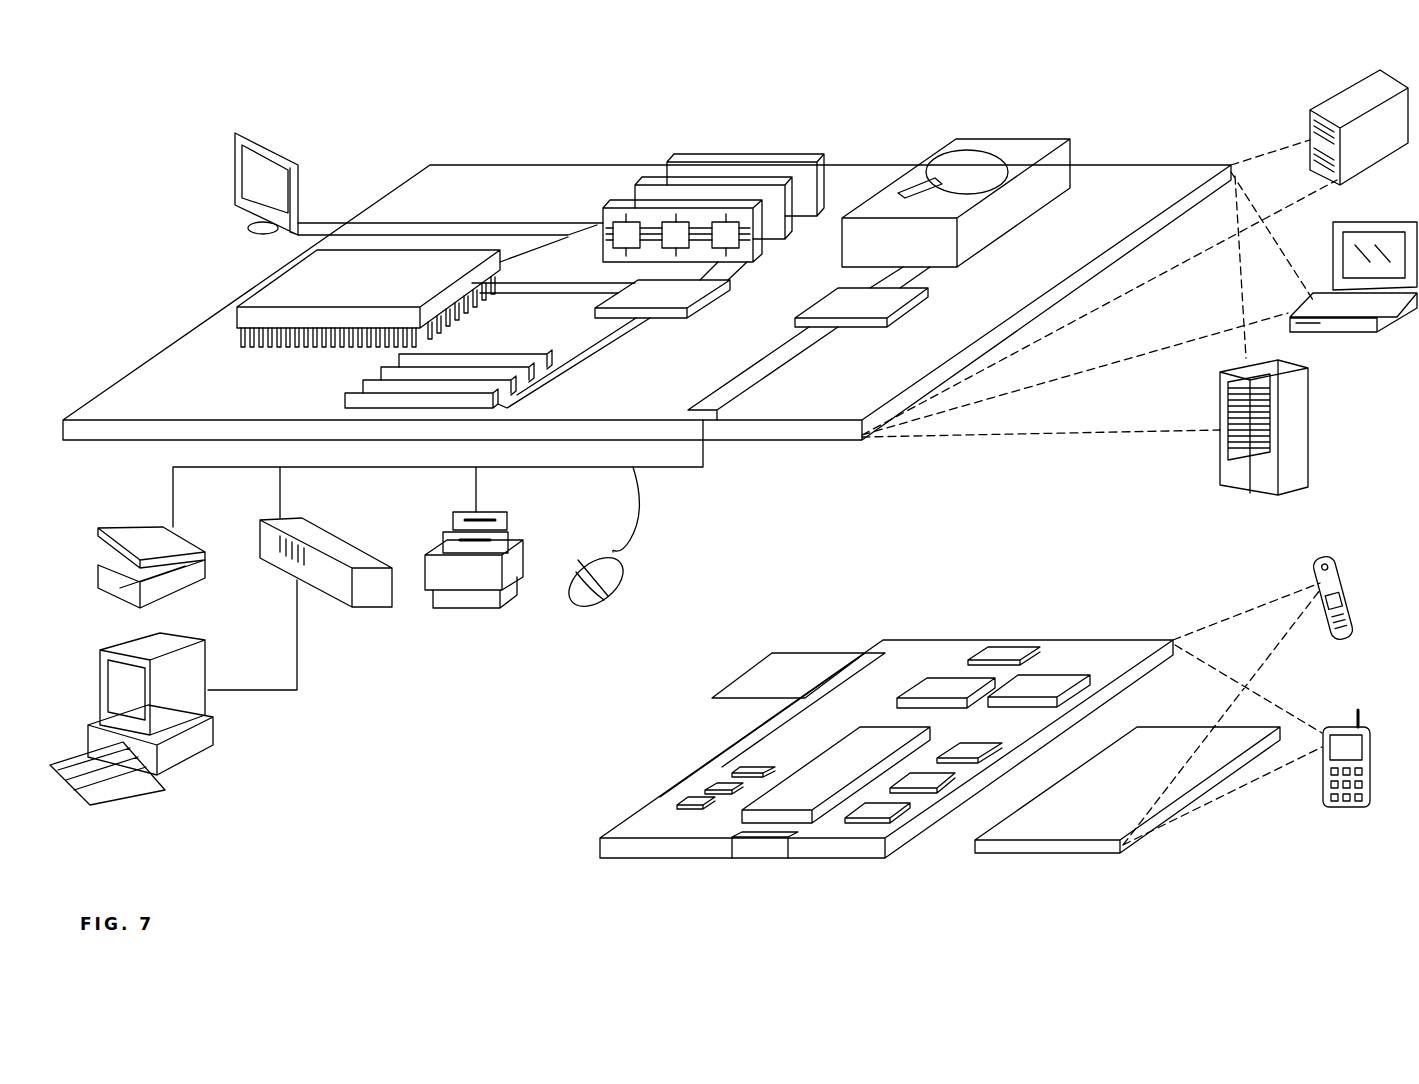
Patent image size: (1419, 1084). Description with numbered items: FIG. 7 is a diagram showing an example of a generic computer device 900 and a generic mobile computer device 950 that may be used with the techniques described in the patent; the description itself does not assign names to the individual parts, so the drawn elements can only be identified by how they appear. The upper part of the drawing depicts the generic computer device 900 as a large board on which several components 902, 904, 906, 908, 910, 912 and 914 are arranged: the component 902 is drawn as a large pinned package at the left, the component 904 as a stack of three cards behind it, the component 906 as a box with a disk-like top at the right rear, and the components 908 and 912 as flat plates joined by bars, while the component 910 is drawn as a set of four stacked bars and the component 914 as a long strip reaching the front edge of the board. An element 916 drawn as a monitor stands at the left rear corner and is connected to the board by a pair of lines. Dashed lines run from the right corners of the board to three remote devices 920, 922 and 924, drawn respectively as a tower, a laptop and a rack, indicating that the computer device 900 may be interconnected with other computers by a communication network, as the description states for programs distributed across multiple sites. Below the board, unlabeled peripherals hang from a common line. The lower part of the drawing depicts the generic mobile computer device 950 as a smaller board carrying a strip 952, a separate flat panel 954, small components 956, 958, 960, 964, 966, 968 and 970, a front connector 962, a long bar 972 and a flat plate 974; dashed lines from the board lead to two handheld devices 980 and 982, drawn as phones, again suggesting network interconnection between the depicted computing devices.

The computer system 900 is at (378, 105).
The processor 902 is at (264, 285).
The memory modules 904 is at (750, 158).
The hard disk drive 906 is at (1003, 133).
The adapter card 908 is at (675, 292).
The expansion cards 910 is at (375, 378).
The network adapter 912 is at (832, 297).
The I/O bus 914 is at (710, 407).
The display 916 is at (240, 132).
The server 920 is at (1335, 100).
The laptop computer 922 is at (1393, 220).
The storage server 924 is at (1308, 424).
The mobile device 950 is at (550, 872).
The bus 952 is at (800, 780).
The display panel 954 is at (1168, 745).
The component 956 is at (888, 810).
The component 958 is at (927, 780).
The component 960 is at (970, 743).
The connector 962 is at (760, 840).
The components 964 is at (712, 787).
The memory 966 is at (945, 678).
The processor 968 is at (1047, 680).
The component 970 is at (1003, 650).
The bus 972 is at (865, 653).
The plate 974 is at (772, 653).
The mobile phone 980 is at (1328, 553).
The cellular phone 982 is at (1340, 725).